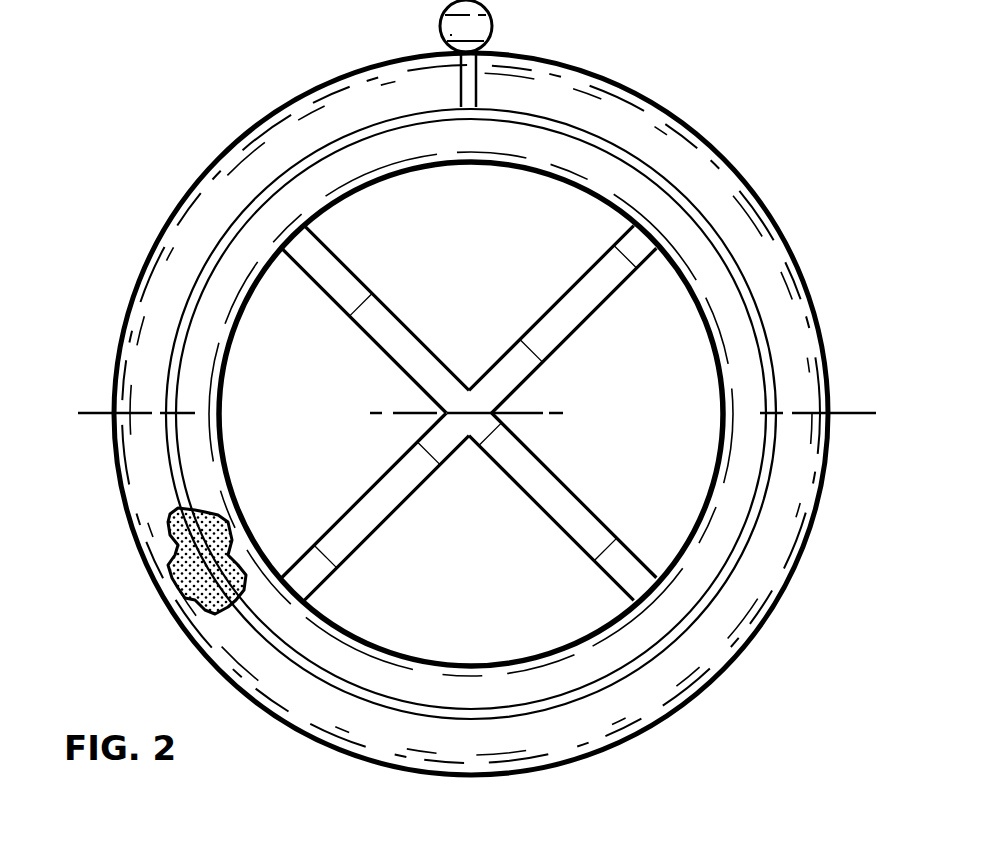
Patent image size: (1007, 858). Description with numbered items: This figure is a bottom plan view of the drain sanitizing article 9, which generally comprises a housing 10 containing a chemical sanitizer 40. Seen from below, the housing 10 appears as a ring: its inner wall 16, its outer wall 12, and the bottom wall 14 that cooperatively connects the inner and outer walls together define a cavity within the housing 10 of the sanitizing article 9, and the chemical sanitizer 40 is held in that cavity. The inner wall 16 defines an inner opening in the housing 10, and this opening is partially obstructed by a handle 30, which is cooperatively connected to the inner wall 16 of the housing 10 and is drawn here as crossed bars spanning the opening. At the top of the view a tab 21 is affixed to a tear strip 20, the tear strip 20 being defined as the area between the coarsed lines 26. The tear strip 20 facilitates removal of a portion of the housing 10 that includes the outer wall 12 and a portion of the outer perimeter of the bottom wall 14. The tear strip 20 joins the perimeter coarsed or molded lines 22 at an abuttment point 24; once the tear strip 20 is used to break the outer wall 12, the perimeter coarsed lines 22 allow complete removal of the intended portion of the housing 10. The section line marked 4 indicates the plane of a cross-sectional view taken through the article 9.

The drain sanitizing article 9 is at (836, 309).
The housing 10 is at (119, 341).
The outer wall 12 is at (203, 172).
The bottom wall 14 is at (745, 467).
The inner wall 16 is at (432, 165).
The tear strip 20 is at (477, 70).
The tab 21 is at (492, 24).
The perimeter coarsed lines 22 is at (598, 146).
The abuttment point 24 is at (465, 106).
The coarsed lines 26 is at (460, 80).
The handle 30 is at (330, 284).
The chemical sanitizer 40 is at (182, 572).
The section line 4- 4 is at (90, 411).